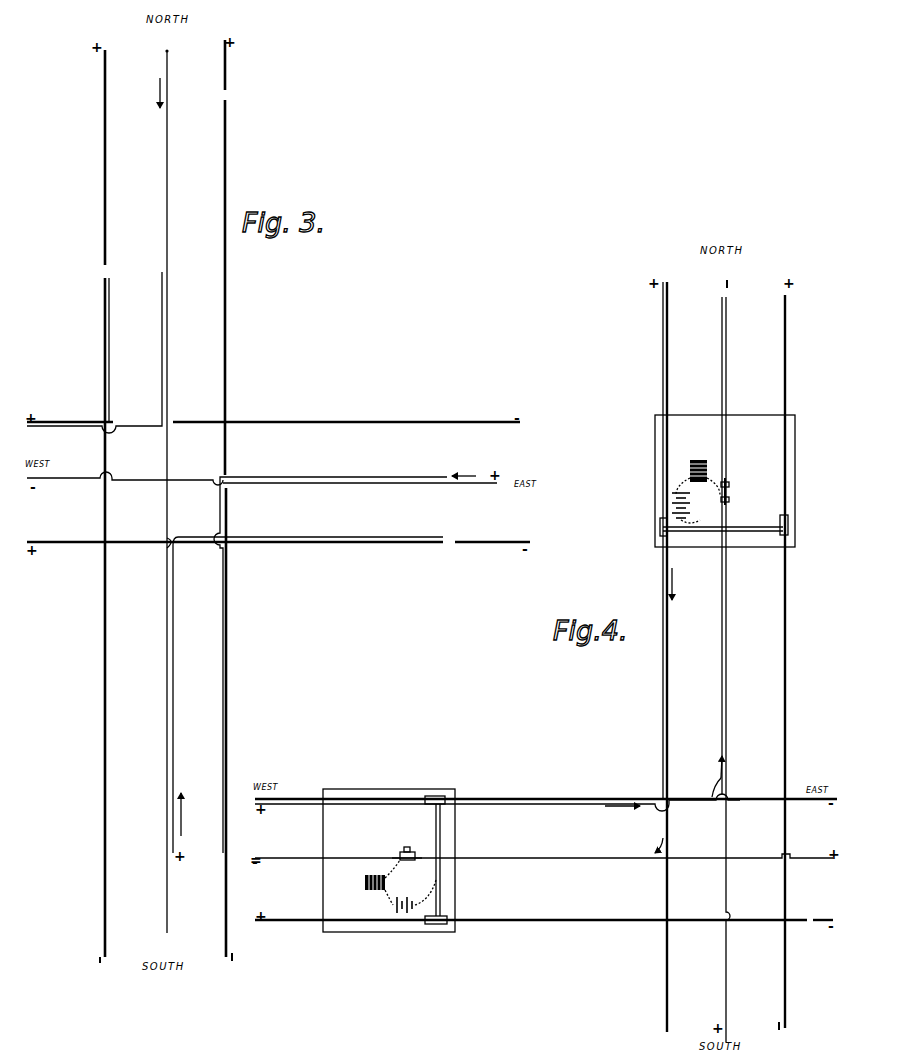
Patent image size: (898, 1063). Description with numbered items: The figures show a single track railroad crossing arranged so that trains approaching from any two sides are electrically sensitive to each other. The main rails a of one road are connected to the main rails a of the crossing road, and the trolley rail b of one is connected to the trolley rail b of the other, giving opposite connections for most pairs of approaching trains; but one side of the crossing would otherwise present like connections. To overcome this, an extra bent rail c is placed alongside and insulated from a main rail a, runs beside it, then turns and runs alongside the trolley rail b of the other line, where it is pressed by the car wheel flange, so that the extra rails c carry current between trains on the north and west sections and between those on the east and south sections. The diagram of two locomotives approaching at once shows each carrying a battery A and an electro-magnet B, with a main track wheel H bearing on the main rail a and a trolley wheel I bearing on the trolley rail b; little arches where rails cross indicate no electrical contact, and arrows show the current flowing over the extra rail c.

In FIG. 3, the main rail a is at (246, 718).
In FIG. 4, the main rail a is at (568, 794).
In FIG. 3, the trolley rail b is at (167, 895).
In FIG. 4, the trolley rail b is at (286, 862).
In FIG. 3, the extra rail c is at (110, 332).
In FIG. 4, the extra rail c is at (722, 644).
In FIG. 4, the battery A is at (674, 496).
In FIG. 4, the electro-magnet B is at (694, 459).
In FIG. 4, the main track wheel H is at (660, 540).
In FIG. 4, the trolley wheel I is at (728, 488).